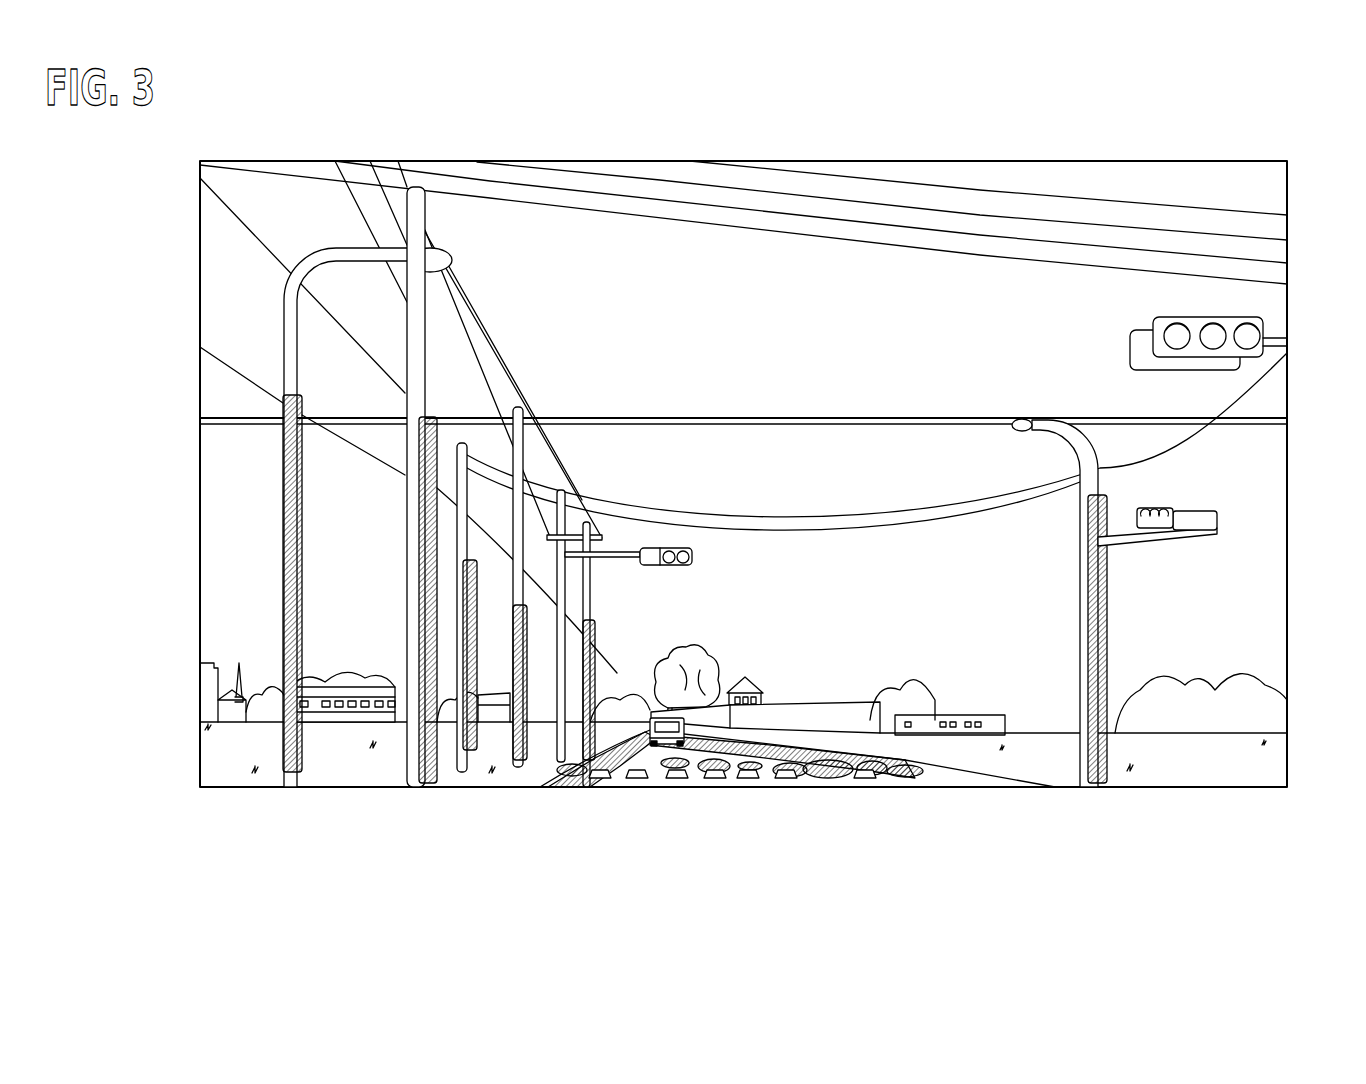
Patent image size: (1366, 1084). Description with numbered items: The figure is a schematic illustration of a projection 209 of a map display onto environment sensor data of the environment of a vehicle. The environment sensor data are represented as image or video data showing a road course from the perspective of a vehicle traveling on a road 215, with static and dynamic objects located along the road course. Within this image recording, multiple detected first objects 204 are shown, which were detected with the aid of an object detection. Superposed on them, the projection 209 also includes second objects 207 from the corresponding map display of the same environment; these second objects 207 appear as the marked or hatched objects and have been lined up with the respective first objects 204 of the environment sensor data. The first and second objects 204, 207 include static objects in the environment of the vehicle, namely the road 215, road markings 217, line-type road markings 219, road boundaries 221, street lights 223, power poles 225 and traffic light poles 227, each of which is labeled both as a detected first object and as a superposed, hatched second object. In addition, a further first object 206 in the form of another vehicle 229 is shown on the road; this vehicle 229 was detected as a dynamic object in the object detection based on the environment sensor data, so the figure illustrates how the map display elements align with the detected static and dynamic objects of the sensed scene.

The first objects 204 is at (761, 505).
The further first object 206 is at (716, 663).
The second objects 207 is at (761, 505).
The projection 209 is at (1232, 148).
The road 215 is at (945, 773).
The road markings 217 is at (836, 740).
The line-type road markings 219 is at (605, 770).
The road boundaries 221 is at (948, 768).
The street lights 223 is at (318, 257).
The power poles 225 is at (417, 187).
The traffic light poles 227 is at (1100, 460).
The another vehicle 229 is at (670, 737).